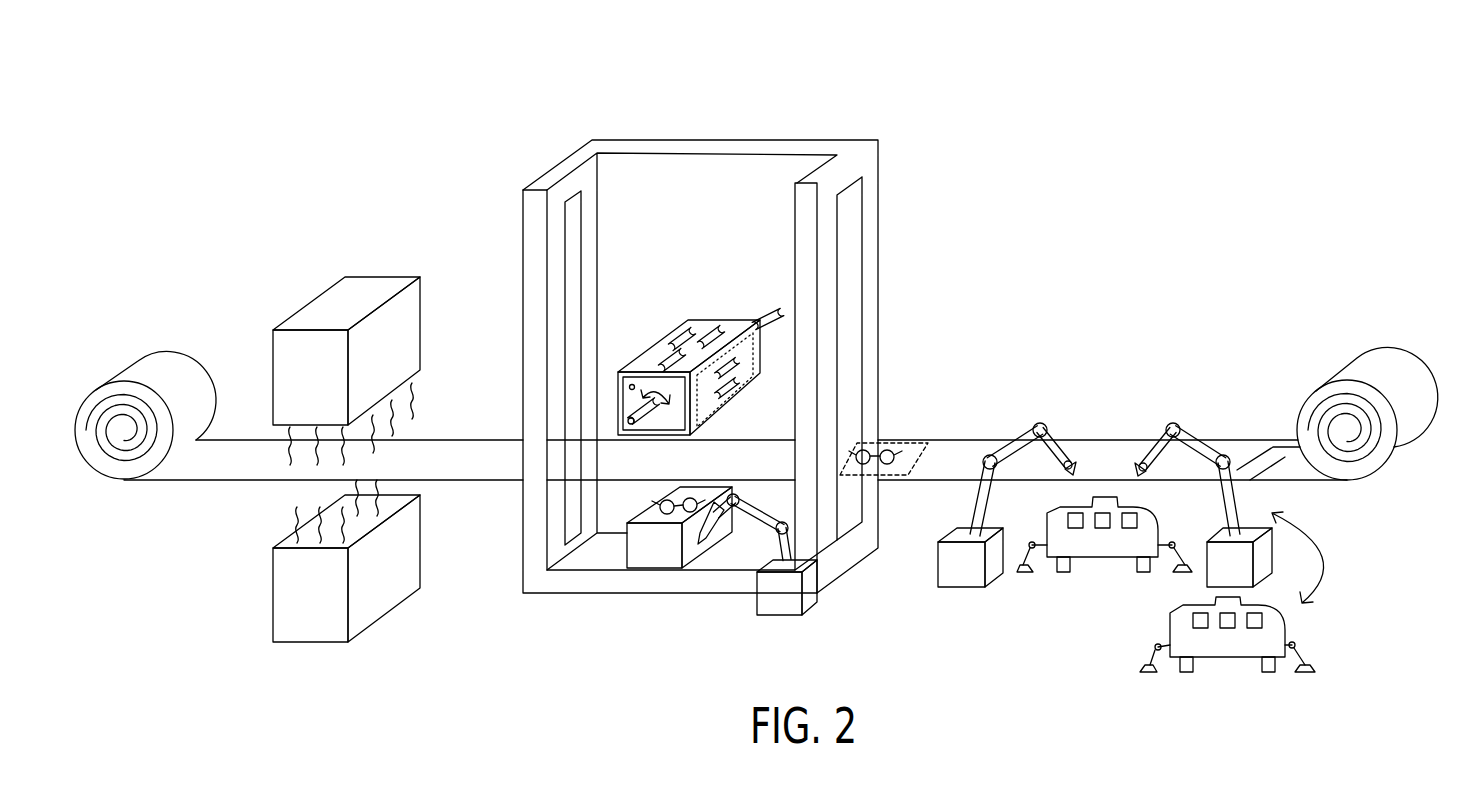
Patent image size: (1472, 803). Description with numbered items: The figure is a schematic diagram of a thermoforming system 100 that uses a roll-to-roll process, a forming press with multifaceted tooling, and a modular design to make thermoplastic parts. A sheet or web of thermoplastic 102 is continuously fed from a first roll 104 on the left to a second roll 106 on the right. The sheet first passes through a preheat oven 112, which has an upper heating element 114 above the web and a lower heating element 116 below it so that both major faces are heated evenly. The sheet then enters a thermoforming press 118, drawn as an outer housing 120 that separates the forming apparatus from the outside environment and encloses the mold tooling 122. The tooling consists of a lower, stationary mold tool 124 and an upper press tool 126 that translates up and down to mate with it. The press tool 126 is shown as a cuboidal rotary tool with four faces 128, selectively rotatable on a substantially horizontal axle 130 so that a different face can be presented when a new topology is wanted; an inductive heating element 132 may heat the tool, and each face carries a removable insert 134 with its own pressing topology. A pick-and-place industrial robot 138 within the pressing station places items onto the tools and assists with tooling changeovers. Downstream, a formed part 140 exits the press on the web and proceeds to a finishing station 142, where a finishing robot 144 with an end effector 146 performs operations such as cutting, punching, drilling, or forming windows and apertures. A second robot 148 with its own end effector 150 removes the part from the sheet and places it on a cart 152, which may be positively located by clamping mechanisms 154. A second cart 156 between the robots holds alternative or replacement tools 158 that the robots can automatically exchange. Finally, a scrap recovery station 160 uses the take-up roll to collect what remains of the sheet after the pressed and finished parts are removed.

The thermoforming system 100 is at (1295, 168).
The thermoplastic sheet 102 is at (223, 470).
The first roll 104 is at (187, 363).
The second roll 106 is at (1392, 357).
The preheat oven 112 is at (392, 459).
The upper heating element 114 is at (407, 310).
The lower heating element 116 is at (410, 543).
The thermoforming press 118 is at (737, 352).
The outer housing 120 is at (878, 250).
The mold tooling 122 is at (699, 329).
The mold tool 124 is at (650, 543).
The press tool 126 is at (740, 292).
The faces 128 is at (710, 330).
The axle 130 is at (763, 317).
The inductive heating element 132 is at (632, 387).
The removable insert 134 is at (653, 350).
The pick-and-place industrial robot 138 is at (782, 602).
The formed part 140 is at (911, 432).
The finishing station 142 is at (1172, 564).
The finishing robot 144 is at (999, 493).
The end effector 146 is at (1077, 465).
The second robot 148 is at (1194, 493).
The end effector 150 is at (1138, 467).
The cart 152 is at (1227, 663).
The clamping mechanisms 154 is at (1170, 557).
The second cart 156 is at (1188, 578).
The replacement tools 158 is at (1102, 513).
The scrap recovery station 160 is at (1385, 548).